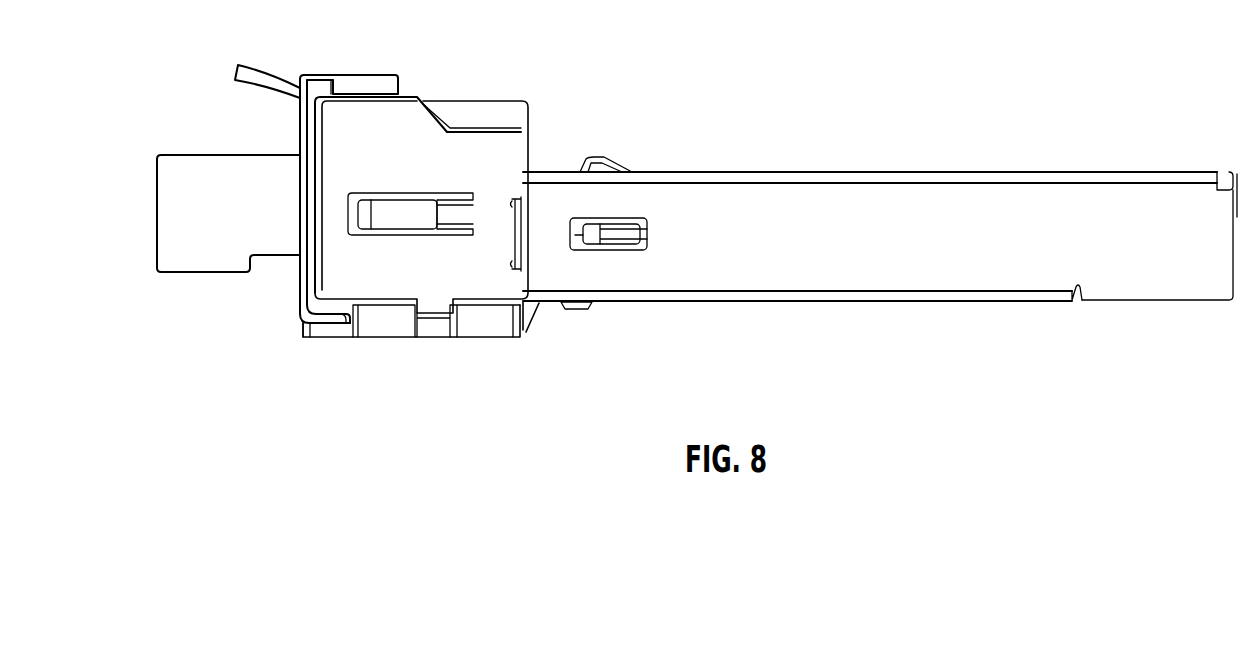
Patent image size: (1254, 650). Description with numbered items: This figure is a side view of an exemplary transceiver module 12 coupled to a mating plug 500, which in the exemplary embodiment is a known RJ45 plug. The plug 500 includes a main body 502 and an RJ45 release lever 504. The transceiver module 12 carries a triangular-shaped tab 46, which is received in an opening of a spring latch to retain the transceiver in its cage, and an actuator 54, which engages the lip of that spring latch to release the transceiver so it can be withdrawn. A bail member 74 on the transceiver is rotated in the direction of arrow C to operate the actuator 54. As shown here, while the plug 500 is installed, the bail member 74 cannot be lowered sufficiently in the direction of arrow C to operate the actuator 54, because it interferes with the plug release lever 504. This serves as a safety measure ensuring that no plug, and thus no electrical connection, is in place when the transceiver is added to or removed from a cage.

The transceiver module 12 is at (716, 150).
The triangular-shaped tab 46 is at (578, 312).
The actuator 54 is at (530, 317).
The bail member 74 is at (352, 76).
The plug 500 is at (196, 111).
The main body 502 is at (157, 203).
The RJ45 release lever 504 is at (243, 63).
The arrow C is at (290, 303).